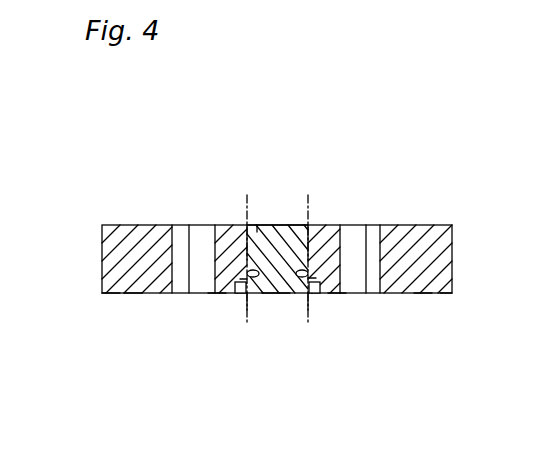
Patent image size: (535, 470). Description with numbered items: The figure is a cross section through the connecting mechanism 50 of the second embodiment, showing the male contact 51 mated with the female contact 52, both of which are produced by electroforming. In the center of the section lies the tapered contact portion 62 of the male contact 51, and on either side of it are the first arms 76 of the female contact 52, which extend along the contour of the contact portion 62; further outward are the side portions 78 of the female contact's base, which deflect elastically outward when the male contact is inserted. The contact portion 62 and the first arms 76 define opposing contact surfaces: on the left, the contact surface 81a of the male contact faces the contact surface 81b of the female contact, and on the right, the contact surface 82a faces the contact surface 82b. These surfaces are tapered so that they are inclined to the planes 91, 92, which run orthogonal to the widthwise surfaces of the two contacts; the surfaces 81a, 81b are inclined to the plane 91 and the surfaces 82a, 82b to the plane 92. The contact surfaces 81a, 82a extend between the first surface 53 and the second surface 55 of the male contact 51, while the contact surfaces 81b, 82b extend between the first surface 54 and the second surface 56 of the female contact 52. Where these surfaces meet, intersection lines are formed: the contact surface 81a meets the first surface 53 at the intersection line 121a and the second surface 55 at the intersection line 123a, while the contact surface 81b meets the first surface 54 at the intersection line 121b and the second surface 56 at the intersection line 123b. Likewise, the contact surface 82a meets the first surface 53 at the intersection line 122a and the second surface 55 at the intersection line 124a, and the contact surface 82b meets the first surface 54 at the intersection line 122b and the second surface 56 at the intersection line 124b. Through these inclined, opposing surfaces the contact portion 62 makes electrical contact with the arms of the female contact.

The connecting mechanism 50 is at (431, 197).
The male contact 51 is at (286, 224).
The female contact 52 is at (452, 225).
The first surface 53 is at (277, 224).
The first surface 54 is at (126, 224).
The second surface 55 is at (275, 294).
The second surface 56 is at (112, 294).
The contact portion 62 is at (257, 224).
The first arm 76 is at (229, 224).
The side portions 78 is at (132, 294).
The contact surface 81a is at (247, 260).
The contact surface 81b is at (247, 279).
The contact surface 82a is at (310, 262).
The contact surface 82b is at (310, 278).
The plane 91 is at (244, 297).
The plane 92 is at (314, 314).
The intersection line 121a is at (241, 224).
The intersection line 121b is at (243, 224).
The intersection line 122a is at (311, 224).
The intersection line 122b is at (309, 224).
The intersection line 123a is at (250, 296).
The intersection line 123b is at (252, 296).
The intersection line 124a is at (305, 296).
The intersection line 124b is at (310, 305).